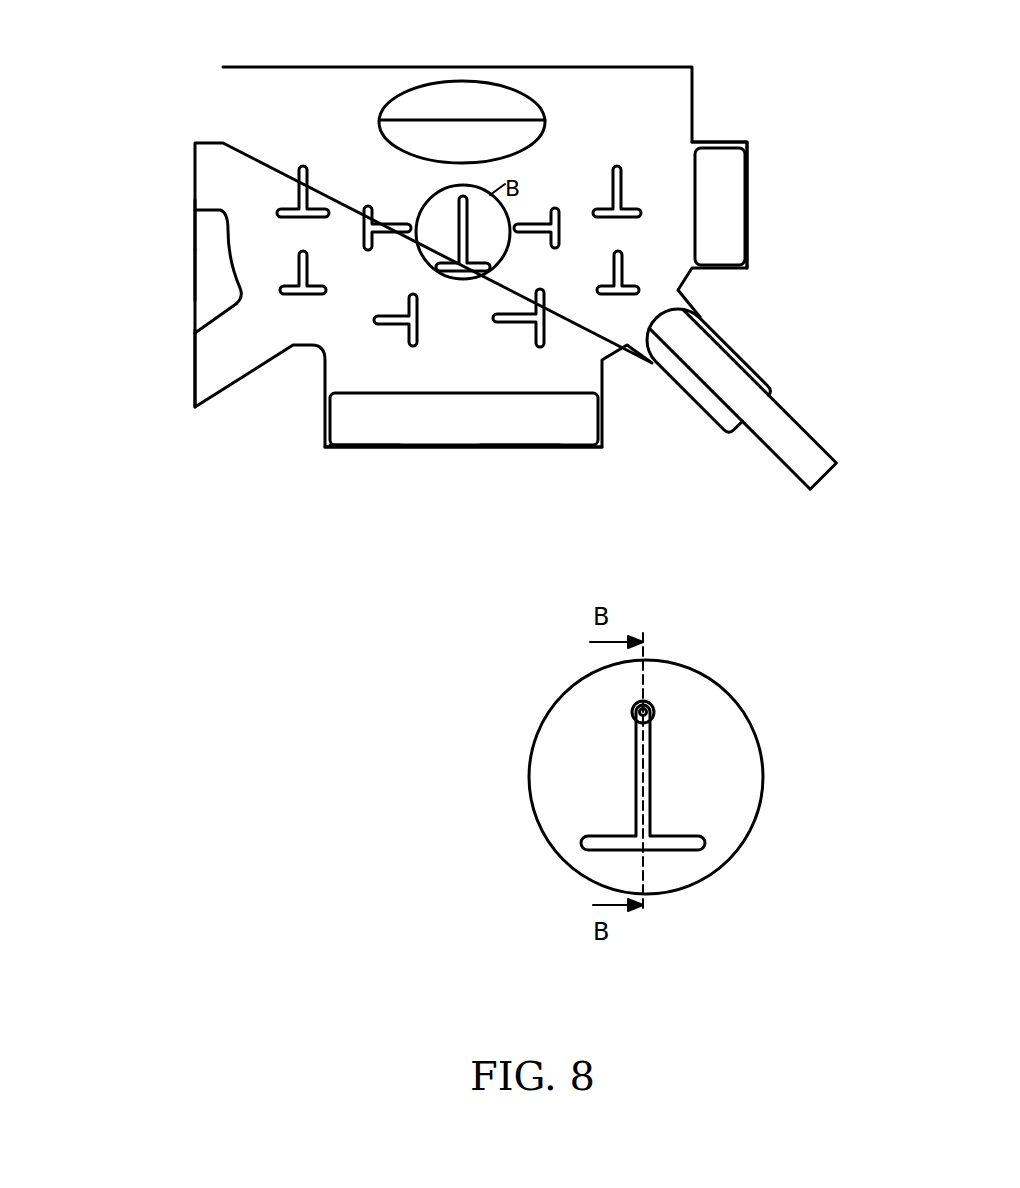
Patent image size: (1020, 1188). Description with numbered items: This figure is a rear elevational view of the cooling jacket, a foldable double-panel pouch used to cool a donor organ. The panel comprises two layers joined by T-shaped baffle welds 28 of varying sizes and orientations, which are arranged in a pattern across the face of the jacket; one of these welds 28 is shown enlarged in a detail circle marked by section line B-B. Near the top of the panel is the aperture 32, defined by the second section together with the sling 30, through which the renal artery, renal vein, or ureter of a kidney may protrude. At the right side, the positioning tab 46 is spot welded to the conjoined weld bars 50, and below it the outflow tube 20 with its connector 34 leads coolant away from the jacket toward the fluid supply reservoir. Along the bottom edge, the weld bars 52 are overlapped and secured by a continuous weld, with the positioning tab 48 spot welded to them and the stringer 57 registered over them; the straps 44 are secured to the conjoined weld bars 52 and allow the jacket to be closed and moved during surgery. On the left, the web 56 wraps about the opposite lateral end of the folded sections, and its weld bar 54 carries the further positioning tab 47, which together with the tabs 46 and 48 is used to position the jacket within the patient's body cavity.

The outflow tube 20 is at (807, 443).
The T-shaped baffle welds 28 is at (550, 225).
The sling 30 is at (602, 83).
The aperture 32 is at (488, 83).
The connector 34 is at (753, 373).
The strap 44 is at (402, 447).
The positioning tab 46 is at (747, 202).
The positioning tab 47 is at (195, 265).
The positioning tab 48 is at (472, 447).
The weld bar 50 is at (747, 173).
The weld bar 52 is at (377, 447).
The weld bar 54 is at (195, 228).
The web 56 is at (203, 355).
The stringer 57 is at (485, 452).